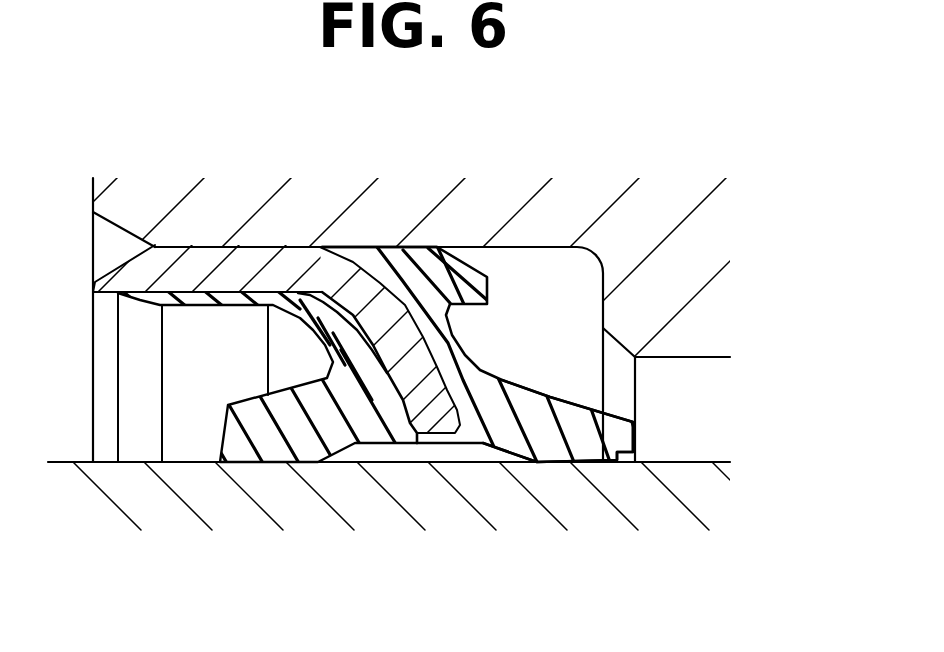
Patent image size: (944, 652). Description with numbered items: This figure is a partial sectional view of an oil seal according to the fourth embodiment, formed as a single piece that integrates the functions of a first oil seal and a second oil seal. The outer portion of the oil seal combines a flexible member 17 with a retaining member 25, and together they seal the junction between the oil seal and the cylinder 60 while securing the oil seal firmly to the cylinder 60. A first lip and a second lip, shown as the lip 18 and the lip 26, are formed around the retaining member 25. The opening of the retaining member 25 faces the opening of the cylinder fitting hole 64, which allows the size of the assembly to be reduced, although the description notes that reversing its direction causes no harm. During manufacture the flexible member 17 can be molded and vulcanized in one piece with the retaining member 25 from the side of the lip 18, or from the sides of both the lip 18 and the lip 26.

The flexible member 17 is at (433, 258).
The lip 18 is at (537, 432).
The retaining member 25 is at (220, 262).
The lip 26 is at (283, 425).
The cylinder 60 is at (323, 190).
The cylinder fitting hole 64 is at (375, 247).